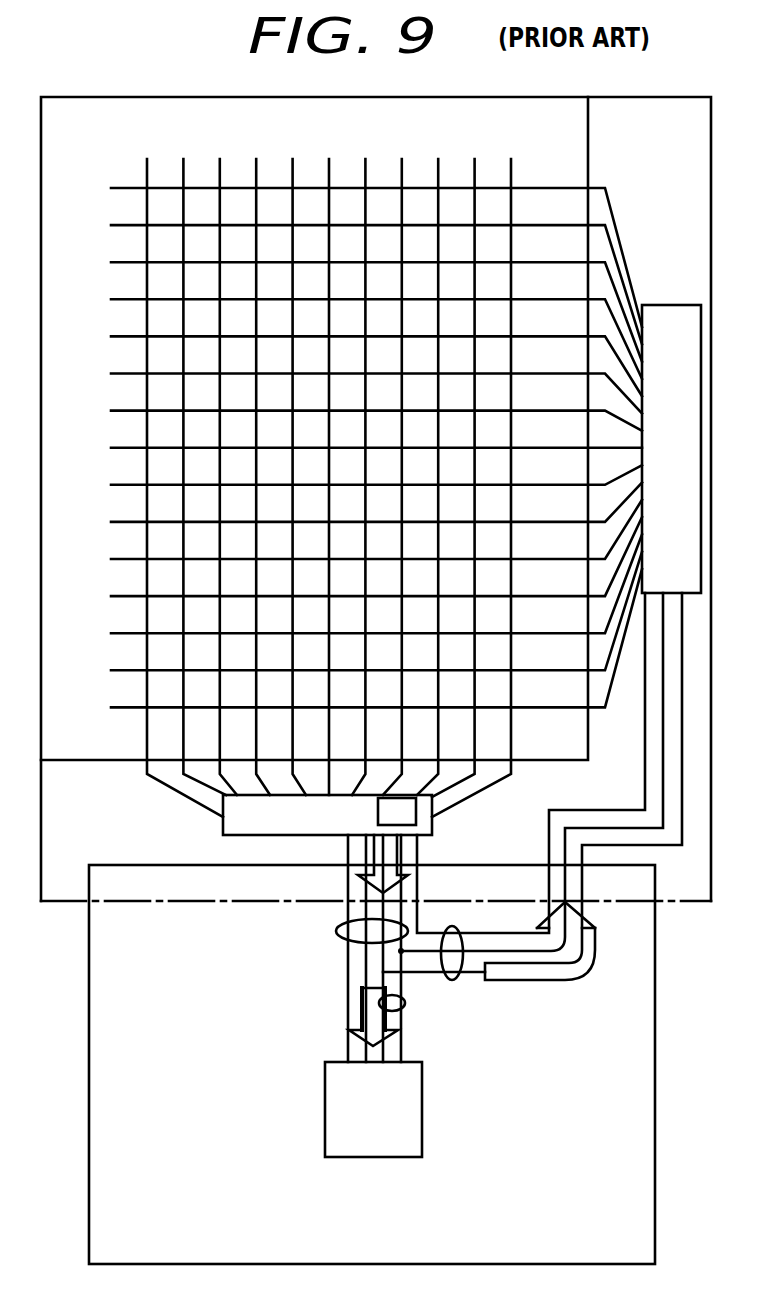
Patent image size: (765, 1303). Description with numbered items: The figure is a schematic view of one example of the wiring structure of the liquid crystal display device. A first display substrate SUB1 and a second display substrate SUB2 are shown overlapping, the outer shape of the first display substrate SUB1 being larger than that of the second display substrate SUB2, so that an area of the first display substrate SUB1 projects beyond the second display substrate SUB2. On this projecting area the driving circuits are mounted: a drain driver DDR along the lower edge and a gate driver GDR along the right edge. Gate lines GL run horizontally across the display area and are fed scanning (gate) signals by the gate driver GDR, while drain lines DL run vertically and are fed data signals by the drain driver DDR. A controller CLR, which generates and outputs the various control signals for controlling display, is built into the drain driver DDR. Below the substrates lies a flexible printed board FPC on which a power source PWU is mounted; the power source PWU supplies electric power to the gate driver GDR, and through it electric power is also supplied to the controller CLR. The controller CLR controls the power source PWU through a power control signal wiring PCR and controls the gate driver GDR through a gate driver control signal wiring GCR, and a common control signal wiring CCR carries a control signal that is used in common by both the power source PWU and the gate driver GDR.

The gate line GL is at (165, 186).
The drain line DL is at (260, 170).
The first display substrate SUB1 is at (685, 143).
The second display substrate SUB2 is at (573, 135).
The gate driver GDR is at (671, 449).
The drain driver DDR is at (327, 815).
The controller CLR is at (418, 822).
The power control signal wiring PCR is at (337, 932).
The gate driver control signal wiring GCR is at (455, 980).
The common control signal wiring CCR is at (405, 1004).
The power source PWU is at (373, 1109).
The flexible printed board FPC is at (178, 1182).